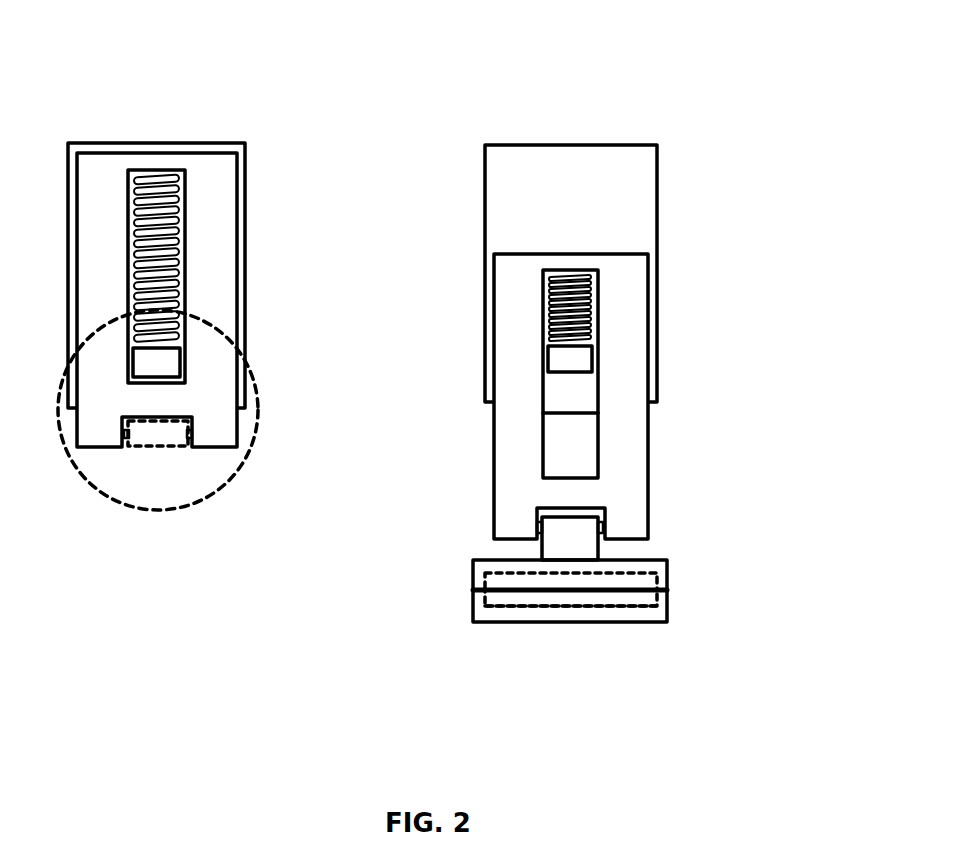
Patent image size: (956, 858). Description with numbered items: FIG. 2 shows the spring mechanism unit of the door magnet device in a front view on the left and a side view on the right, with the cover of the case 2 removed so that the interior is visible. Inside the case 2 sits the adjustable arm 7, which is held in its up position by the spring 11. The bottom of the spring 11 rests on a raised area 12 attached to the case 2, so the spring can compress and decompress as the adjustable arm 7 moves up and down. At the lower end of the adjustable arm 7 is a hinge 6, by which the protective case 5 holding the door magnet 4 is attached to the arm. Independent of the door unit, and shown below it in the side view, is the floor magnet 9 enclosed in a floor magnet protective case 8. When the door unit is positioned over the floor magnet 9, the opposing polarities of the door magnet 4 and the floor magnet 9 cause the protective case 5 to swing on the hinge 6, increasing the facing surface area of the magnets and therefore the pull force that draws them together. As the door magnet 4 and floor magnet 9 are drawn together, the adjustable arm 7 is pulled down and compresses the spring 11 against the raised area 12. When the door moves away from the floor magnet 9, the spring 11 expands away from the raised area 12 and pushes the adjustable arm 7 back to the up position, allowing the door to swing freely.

The case 2 is at (243, 168).
The adjustable arm 7 is at (210, 268).
The spring 11 is at (180, 182).
The raised area 12 is at (170, 362).
The hinge 6 is at (193, 435).
The door magnet 4 is at (630, 580).
The protective case 5 is at (478, 572).
The floor magnet protective case 8 is at (484, 620).
The floor magnet 9 is at (643, 603).